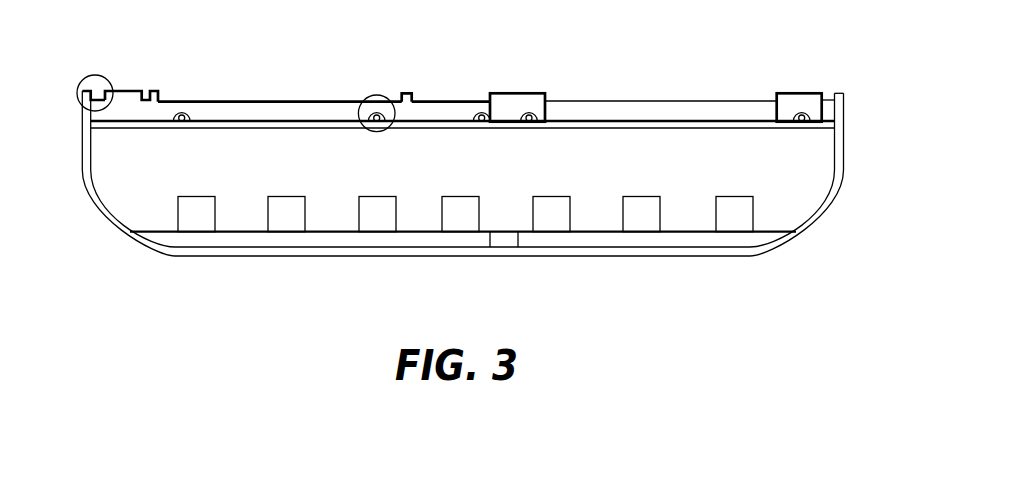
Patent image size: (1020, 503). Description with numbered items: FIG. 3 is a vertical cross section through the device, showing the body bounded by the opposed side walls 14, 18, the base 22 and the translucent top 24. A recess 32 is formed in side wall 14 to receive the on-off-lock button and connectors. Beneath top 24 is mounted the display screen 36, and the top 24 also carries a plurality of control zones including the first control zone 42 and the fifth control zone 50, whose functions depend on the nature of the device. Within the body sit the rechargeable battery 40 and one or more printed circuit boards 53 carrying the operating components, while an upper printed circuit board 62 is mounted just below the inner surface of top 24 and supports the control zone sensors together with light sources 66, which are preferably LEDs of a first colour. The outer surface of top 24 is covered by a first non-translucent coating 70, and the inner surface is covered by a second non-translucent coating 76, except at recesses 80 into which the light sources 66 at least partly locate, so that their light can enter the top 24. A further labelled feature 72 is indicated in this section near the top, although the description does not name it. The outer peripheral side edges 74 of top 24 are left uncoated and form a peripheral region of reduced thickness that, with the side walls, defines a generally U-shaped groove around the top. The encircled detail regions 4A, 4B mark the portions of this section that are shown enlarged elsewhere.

The detail view circle 4A is at (372, 97).
The detail view circle 4B is at (93, 76).
The side wall 14 is at (838, 197).
The side wall 18 is at (88, 198).
The base 22 is at (636, 263).
The top 24 is at (545, 52).
The recess 32 is at (844, 148).
The display screen 36 is at (665, 101).
The rechargeable battery 40 is at (347, 242).
The first control zone 42 is at (445, 110).
The fifth control zone 50 is at (257, 108).
The printed circuit board 53 is at (518, 233).
The upper printed circuit board 62 is at (112, 130).
The light source 66 is at (387, 100).
The first non-translucent coating 70 is at (172, 99).
The support plate 72 is at (548, 101).
The outer peripheral side edge 74 is at (827, 96).
The second non-translucent coating 76 is at (82, 140).
The recess 80 is at (187, 100).